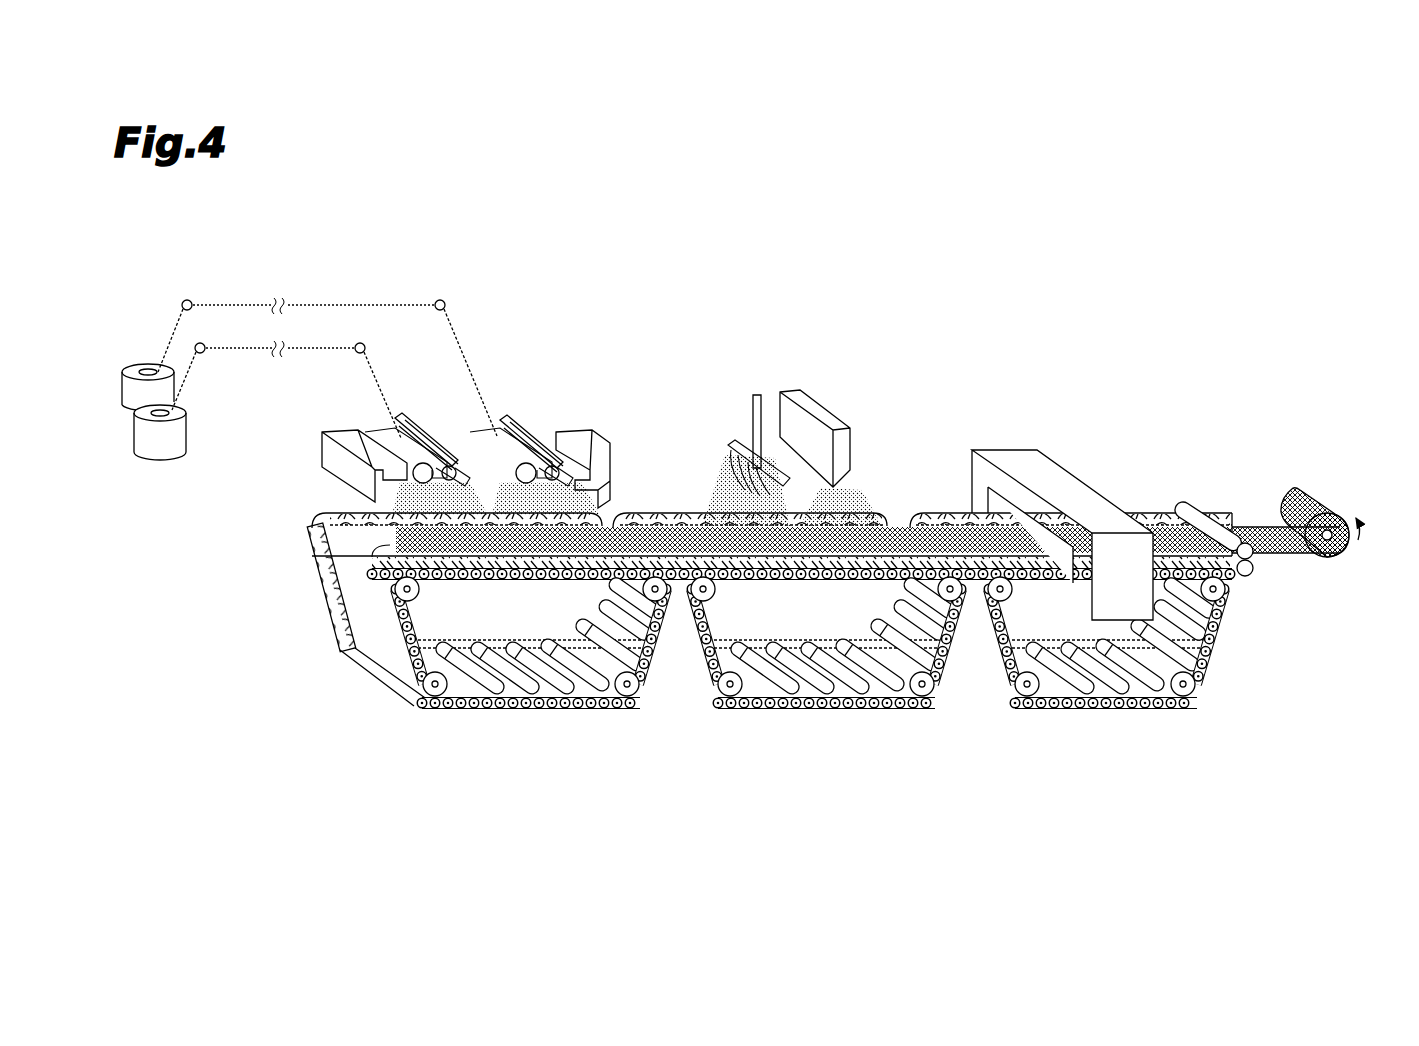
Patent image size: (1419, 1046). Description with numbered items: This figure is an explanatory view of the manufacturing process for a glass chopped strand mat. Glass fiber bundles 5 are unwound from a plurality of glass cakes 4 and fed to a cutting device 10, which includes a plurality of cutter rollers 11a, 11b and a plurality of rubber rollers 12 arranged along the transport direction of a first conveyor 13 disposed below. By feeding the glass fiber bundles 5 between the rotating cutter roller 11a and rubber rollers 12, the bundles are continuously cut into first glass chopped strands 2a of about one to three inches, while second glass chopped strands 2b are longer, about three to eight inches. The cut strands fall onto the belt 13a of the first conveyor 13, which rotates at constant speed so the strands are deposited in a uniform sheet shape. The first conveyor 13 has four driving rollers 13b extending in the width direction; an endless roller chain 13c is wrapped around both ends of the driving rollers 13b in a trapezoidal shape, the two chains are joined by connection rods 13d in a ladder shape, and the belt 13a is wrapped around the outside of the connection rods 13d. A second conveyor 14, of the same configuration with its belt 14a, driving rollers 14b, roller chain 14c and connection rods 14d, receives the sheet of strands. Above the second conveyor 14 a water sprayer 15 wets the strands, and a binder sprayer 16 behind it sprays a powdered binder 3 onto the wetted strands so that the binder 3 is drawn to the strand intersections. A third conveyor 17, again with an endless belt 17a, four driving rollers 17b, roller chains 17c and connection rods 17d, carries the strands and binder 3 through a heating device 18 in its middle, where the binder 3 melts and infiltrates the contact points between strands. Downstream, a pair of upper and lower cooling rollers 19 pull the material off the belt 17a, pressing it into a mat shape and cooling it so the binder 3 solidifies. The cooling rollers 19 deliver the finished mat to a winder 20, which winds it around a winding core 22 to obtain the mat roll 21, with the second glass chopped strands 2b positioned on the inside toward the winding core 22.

The first glass chopped strands 2a is at (322, 458).
The second glass chopped strands 2b is at (586, 472).
The binder 3 is at (850, 512).
The glass cakes 4 is at (150, 450).
The glass fiber bundles 5 is at (322, 346).
The cutting device 10 is at (314, 412).
The cutter roller 11a is at (430, 438).
The cutter roller 11b is at (505, 438).
The rubber rollers 12 is at (416, 464).
The first conveyor 13 is at (432, 716).
The belt 13a is at (345, 540).
The driving rollers 13b is at (348, 646).
The roller chain 13c is at (600, 712).
The connection rods 13d is at (548, 714).
The second conveyor 14 is at (727, 716).
The belt 14a is at (670, 546).
The driving rollers 14b is at (708, 602).
The roller chain 14c is at (897, 712).
The connection rods 14d is at (850, 714).
The water sprayer 15 is at (752, 424).
The binder sprayer 16 is at (852, 442).
The third conveyor 17 is at (1023, 716).
The belt 17a is at (968, 546).
The driving rollers 17b is at (1005, 602).
The roller chain 17c is at (1142, 712).
The connection rods 17d is at (1108, 714).
The heating device 18 is at (1052, 464).
The cooling rollers 19 is at (1240, 556).
The winder 20 is at (1304, 590).
The mat roll 21 is at (1318, 496).
The winding core 22 is at (1340, 548).